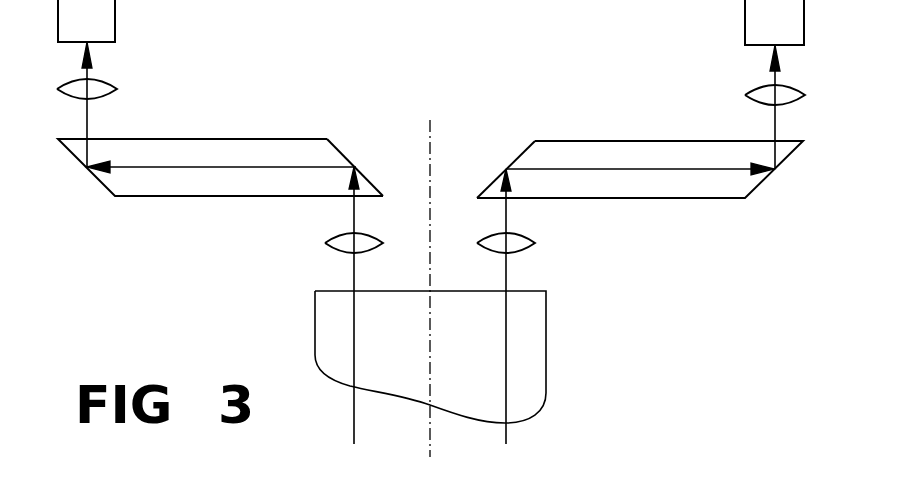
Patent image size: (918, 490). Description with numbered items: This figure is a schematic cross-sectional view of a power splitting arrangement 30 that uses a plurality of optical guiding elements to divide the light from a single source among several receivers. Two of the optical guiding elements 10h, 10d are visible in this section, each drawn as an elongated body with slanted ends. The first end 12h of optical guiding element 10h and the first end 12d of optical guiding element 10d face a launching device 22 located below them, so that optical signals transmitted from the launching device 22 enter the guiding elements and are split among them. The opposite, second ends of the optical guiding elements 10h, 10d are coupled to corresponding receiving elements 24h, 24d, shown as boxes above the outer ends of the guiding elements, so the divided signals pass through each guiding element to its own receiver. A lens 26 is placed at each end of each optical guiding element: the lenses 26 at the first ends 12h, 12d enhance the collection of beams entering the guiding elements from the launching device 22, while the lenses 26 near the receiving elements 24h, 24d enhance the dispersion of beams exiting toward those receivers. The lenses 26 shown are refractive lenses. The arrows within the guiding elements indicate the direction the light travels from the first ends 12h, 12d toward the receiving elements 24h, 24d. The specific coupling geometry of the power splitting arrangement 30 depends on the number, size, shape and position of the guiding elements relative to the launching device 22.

The optical guiding element 10h is at (195, 133).
The optical guiding element 10d is at (666, 134).
The first end 12h is at (320, 139).
The first end 12d is at (546, 141).
The launching device 22 is at (333, 291).
The receiving element 24h is at (86, 21).
The receiving element 24d is at (774, 22).
The lens 26 is at (108, 84).
The power splitting arrangement 30 is at (284, 42).